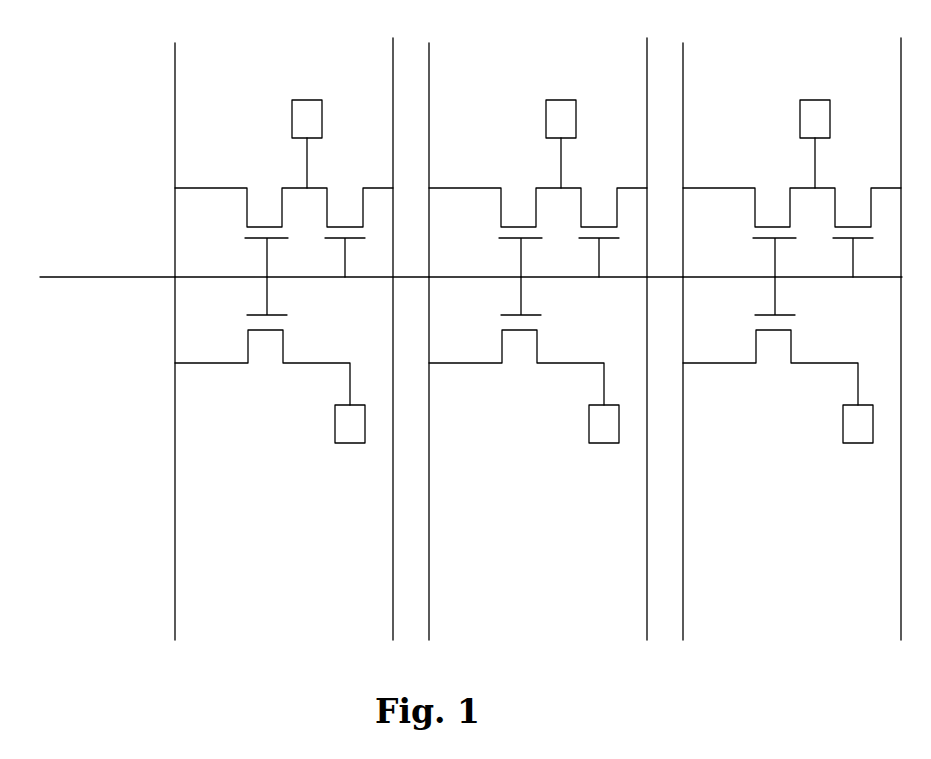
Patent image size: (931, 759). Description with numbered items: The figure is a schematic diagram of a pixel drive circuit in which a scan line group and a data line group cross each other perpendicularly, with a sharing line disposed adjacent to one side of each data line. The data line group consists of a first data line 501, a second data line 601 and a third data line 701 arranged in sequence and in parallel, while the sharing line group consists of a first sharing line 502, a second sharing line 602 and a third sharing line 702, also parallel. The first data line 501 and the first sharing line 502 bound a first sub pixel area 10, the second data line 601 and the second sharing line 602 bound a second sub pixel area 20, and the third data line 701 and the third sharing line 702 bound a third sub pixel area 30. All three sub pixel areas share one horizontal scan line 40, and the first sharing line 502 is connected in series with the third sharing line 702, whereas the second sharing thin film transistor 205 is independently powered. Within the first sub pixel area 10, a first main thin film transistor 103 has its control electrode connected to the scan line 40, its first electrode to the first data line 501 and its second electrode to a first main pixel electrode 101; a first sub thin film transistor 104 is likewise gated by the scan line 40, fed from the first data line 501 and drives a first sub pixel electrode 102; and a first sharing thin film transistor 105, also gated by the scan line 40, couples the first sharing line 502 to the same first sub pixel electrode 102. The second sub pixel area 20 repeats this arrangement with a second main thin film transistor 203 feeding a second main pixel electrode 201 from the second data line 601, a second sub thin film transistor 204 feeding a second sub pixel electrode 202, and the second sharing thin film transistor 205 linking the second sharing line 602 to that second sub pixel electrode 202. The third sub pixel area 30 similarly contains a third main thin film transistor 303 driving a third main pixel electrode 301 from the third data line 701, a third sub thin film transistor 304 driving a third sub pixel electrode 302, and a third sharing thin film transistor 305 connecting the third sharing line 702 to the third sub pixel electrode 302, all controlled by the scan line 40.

The first sub pixel area 10 is at (206, 102).
The second sub pixel area 20 is at (460, 102).
The third sub pixel area 30 is at (714, 102).
The scan line 40 is at (82, 277).
The first main pixel electrode 101 is at (348, 443).
The first sub pixel electrode 102 is at (307, 100).
The first main thin film transistor 103 is at (283, 365).
The first sub thin film transistor 104 is at (282, 188).
The first sharing thin film transistor 105 is at (327, 188).
The second main pixel electrode 201 is at (602, 443).
The second sub pixel electrode 202 is at (561, 100).
The second main thin film transistor 203 is at (537, 365).
The second sub thin film transistor 204 is at (536, 188).
The second sharing thin film transistor 205 is at (581, 188).
The third main pixel electrode 301 is at (856, 443).
The third sub pixel electrode 302 is at (815, 100).
The third main thin film transistor 303 is at (791, 365).
The third sub thin film transistor 304 is at (790, 188).
The third sharing thin film transistor 305 is at (835, 188).
The first data line 501 is at (175, 560).
The first sharing line 502 is at (393, 560).
The second data line 601 is at (429, 560).
The second sharing line 602 is at (647, 560).
The third data line 701 is at (683, 560).
The third sharing line 702 is at (901, 560).